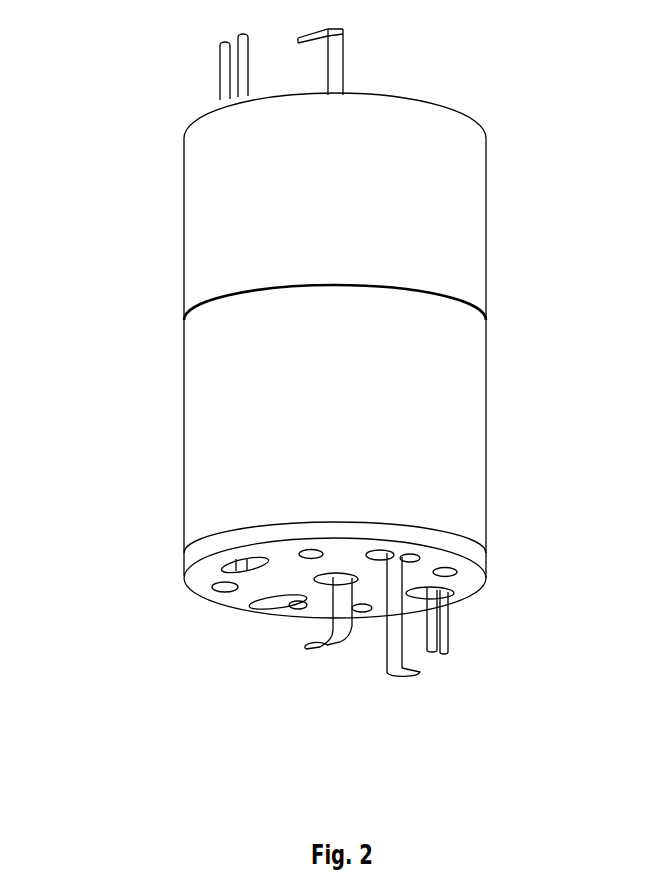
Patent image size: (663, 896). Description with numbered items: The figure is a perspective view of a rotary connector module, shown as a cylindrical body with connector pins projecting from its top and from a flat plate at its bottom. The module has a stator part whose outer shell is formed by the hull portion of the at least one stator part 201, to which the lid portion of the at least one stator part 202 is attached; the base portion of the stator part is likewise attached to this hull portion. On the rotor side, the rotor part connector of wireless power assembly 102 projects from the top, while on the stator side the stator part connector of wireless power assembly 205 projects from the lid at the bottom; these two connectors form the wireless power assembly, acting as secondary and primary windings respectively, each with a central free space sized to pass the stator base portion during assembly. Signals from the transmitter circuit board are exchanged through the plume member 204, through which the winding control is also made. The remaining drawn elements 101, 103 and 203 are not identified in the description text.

The upper housing 101 is at (222, 180).
The rotor part connector of wireless power assembly 102 is at (219, 47).
The hook pin 103 is at (335, 48).
The hull portion of the at least one stator part 201 is at (383, 353).
The lid portion of the at least one stator part 202 is at (228, 543).
The long pin 203 is at (397, 588).
The plume member 204 is at (314, 647).
The stator part connector of wireless power assembly 205 is at (447, 631).